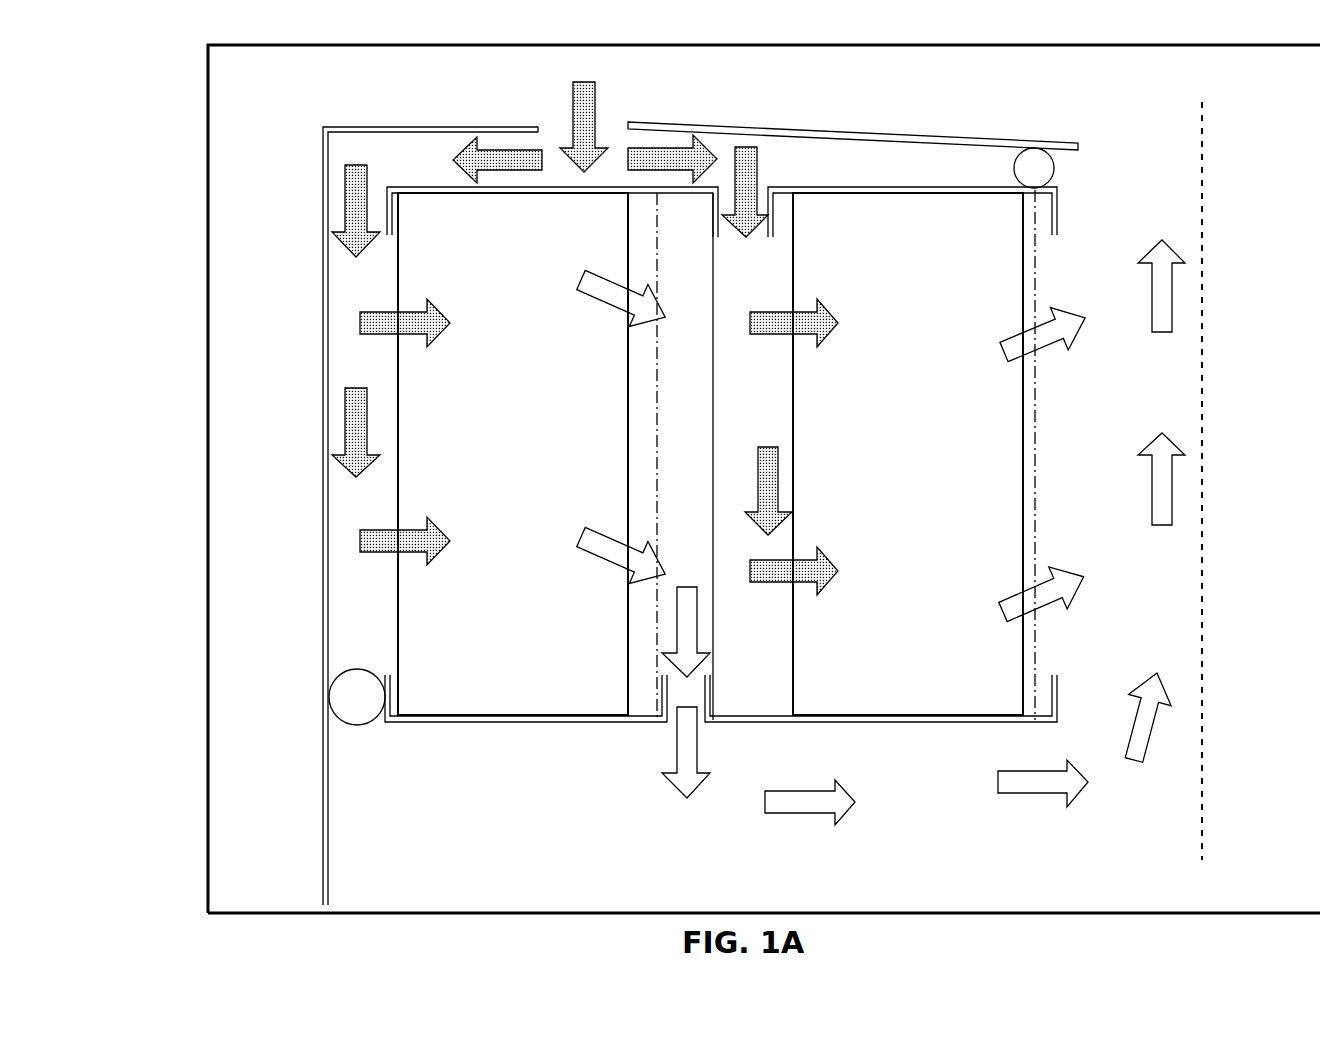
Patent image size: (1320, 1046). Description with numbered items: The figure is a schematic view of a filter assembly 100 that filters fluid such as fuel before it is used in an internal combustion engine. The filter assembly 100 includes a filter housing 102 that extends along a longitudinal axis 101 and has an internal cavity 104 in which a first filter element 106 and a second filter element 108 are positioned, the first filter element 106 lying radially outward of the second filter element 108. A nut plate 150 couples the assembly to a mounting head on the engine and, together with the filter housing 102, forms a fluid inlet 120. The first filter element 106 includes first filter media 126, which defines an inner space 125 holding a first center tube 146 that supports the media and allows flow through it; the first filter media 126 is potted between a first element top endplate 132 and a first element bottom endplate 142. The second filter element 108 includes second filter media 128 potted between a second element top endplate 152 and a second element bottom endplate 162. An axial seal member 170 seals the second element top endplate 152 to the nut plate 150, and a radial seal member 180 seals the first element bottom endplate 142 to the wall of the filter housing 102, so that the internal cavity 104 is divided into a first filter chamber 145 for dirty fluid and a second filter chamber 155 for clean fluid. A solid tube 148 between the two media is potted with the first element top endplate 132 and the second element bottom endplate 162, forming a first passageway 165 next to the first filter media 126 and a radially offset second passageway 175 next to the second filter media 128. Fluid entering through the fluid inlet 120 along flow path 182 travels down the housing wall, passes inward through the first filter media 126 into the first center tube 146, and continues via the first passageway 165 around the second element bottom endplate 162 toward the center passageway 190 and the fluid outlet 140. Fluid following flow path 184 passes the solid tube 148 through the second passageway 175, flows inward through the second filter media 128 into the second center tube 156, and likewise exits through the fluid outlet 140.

The filter assembly 100 is at (183, 120).
The longitudinal axis 101 is at (1203, 267).
The filter housing 102 is at (323, 368).
The internal cavity 104 is at (350, 496).
The first filter element 106 is at (400, 268).
The second filter element 108 is at (842, 210).
The fluid inlet 120 is at (628, 122).
The inner space 125 is at (671, 702).
The first filter media 126 is at (430, 598).
The second filter media 128 is at (958, 668).
The first element top endplate 132 is at (400, 187).
The fluid outlet 140 is at (1078, 147).
The first element bottom endplate 142 is at (507, 722).
The first filter chamber 145 is at (724, 155).
The first center tube 146 is at (670, 578).
The solid tube 148 is at (710, 667).
The nut plate 150 is at (958, 137).
The second element top endplate 152 is at (992, 187).
The second filter chamber 155 is at (1150, 798).
The second center tube 156 is at (1032, 685).
The second element bottom endplate 162 is at (803, 722).
The first passageway 165 is at (691, 702).
The axial seal member 170 is at (1040, 157).
The second passageway 175 is at (765, 188).
The radial seal member 180 is at (348, 697).
The flow path 182 is at (465, 158).
The flow path 184 is at (690, 125).
The center passageway 190 is at (1150, 590).